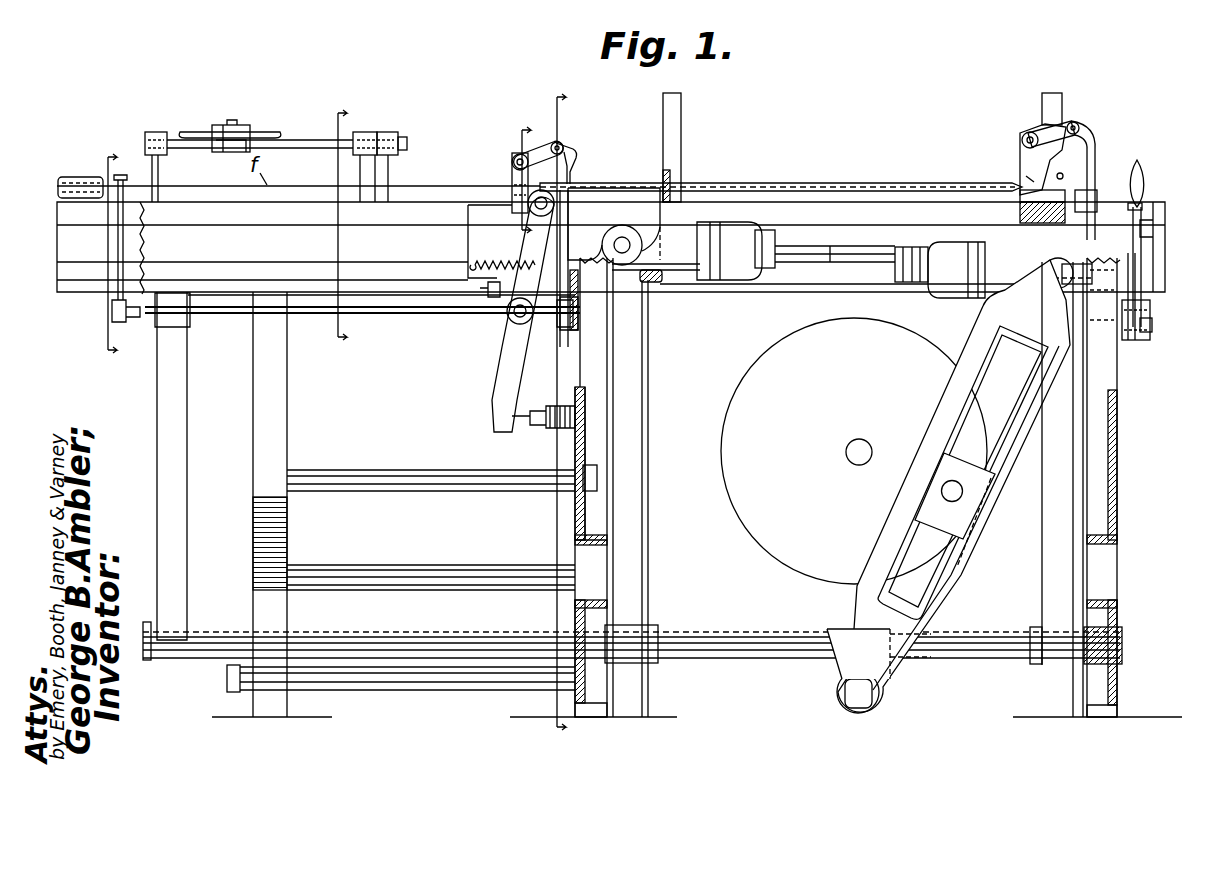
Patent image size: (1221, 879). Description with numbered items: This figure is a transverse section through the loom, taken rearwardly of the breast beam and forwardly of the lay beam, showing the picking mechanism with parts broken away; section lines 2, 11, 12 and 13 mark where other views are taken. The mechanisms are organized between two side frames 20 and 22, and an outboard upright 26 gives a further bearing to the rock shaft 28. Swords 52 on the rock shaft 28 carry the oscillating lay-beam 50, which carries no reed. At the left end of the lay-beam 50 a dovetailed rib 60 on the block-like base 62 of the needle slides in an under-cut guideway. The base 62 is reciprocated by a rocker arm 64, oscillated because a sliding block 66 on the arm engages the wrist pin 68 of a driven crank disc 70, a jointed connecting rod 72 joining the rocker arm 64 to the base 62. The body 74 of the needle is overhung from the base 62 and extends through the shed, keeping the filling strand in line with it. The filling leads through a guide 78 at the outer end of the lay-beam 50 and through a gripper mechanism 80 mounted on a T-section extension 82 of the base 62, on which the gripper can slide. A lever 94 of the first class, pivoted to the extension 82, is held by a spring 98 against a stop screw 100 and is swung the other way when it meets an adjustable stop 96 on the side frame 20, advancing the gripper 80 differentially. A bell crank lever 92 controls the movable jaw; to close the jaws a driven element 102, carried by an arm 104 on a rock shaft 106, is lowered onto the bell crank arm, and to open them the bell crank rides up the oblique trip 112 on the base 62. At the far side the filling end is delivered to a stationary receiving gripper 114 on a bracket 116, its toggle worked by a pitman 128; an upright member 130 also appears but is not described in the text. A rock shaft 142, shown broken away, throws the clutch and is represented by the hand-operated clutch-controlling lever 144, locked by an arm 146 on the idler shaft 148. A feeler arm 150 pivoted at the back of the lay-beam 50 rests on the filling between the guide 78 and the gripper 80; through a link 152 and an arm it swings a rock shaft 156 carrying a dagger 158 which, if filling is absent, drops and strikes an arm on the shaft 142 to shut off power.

The section line 2- 2 is at (561, 422).
The section line 11- 11 is at (110, 254).
The section line 12- 12 is at (519, 180).
The section line 13- 13 is at (343, 225).
The side frame 20 is at (575, 512).
The side frame 22 is at (1118, 432).
The outboard frame 26 is at (288, 433).
The rock shaft 28 is at (713, 637).
The lay-beam 50 is at (424, 201).
The swords 52 is at (186, 412).
The dovetailed rib 60 is at (257, 228).
The base portion 62 is at (624, 197).
The rocker arm 64 is at (965, 566).
The sliding block 66 is at (957, 517).
The wrist pin 68 is at (946, 489).
The crank disc 70 is at (750, 394).
The connecting rod 72 is at (799, 268).
The needle body 74 is at (1106, 183).
The guide 78 is at (82, 176).
The gripper mechanism 80 is at (511, 163).
The extension 82 is at (472, 212).
The bell crank lever 92 is at (548, 144).
The lever of the first class 94 is at (500, 356).
The adjustable stop 96 is at (508, 426).
The spring 98 is at (474, 262).
The stop screw 100 is at (496, 298).
The driven element 102 is at (192, 132).
The arm 104 is at (238, 122).
The rock shaft 106 is at (311, 143).
The trip 112 is at (579, 153).
The receiving mechanism 114 is at (1024, 144).
The bracket 116 is at (1019, 215).
The pitman 128 is at (1094, 153).
The post 130 is at (680, 185).
The rock shaft 142 is at (651, 283).
The clutch-controlling lever 144 is at (1144, 185).
The arm 146 is at (1151, 330).
The idler shaft 148 is at (1151, 346).
The feeler arm 150 is at (124, 177).
The link 152 is at (122, 247).
The rock shaft 156 is at (413, 314).
The dagger 158 is at (548, 332).